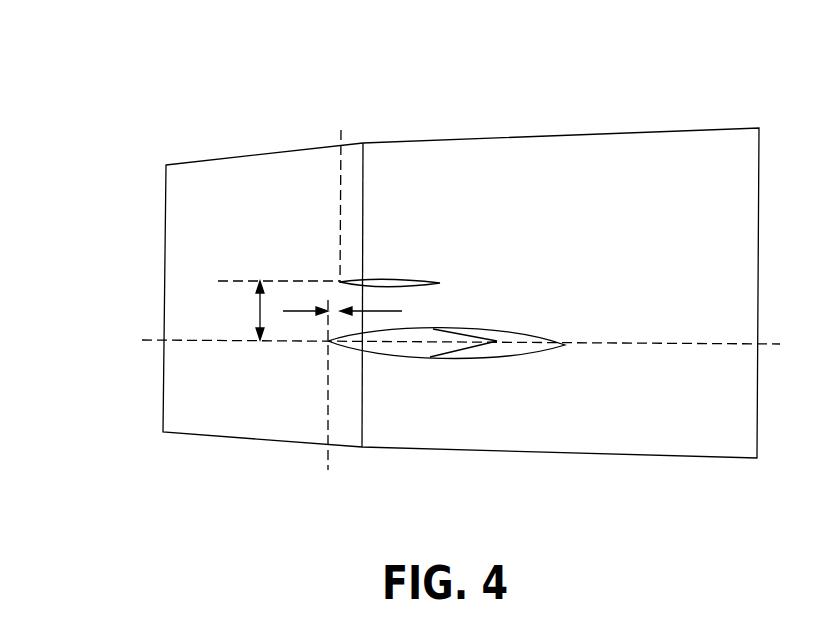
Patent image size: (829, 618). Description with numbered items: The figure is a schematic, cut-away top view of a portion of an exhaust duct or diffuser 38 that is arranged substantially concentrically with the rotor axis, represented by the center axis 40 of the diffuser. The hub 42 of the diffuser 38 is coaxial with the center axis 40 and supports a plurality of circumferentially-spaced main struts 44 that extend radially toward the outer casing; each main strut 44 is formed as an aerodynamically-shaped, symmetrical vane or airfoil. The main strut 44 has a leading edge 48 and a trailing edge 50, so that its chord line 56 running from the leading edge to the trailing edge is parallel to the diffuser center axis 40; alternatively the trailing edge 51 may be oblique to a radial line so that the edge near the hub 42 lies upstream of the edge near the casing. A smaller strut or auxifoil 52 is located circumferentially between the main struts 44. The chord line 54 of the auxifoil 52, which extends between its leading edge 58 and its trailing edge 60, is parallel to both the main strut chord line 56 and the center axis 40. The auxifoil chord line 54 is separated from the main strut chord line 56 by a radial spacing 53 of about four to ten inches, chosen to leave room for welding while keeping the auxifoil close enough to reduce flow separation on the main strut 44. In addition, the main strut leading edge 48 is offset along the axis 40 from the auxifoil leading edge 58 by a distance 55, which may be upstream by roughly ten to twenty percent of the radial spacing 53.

The exhaust duct or diffuser 38 is at (491, 92).
The center axis 40 is at (632, 343).
The hub 42 is at (387, 423).
The main strut 44 is at (448, 379).
The leading edge 48 is at (328, 341).
The trailing edge 50 is at (497, 342).
The trailing edge 51 is at (565, 345).
The auxifoil 52 is at (402, 260).
The spacing 53 is at (237, 305).
The chord line 54 is at (292, 280).
The distance 55 is at (412, 310).
The chord line 56 is at (288, 343).
The leading edge 58 is at (340, 282).
The trailing edge 60 is at (440, 283).